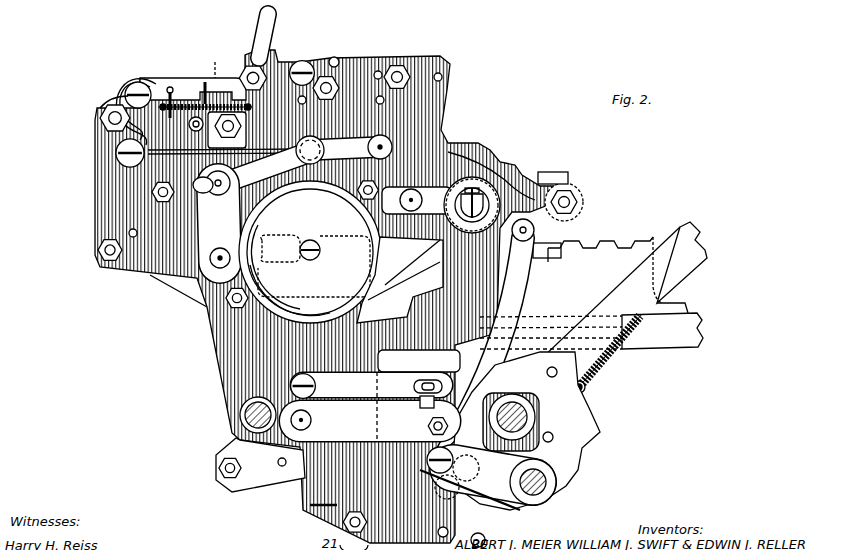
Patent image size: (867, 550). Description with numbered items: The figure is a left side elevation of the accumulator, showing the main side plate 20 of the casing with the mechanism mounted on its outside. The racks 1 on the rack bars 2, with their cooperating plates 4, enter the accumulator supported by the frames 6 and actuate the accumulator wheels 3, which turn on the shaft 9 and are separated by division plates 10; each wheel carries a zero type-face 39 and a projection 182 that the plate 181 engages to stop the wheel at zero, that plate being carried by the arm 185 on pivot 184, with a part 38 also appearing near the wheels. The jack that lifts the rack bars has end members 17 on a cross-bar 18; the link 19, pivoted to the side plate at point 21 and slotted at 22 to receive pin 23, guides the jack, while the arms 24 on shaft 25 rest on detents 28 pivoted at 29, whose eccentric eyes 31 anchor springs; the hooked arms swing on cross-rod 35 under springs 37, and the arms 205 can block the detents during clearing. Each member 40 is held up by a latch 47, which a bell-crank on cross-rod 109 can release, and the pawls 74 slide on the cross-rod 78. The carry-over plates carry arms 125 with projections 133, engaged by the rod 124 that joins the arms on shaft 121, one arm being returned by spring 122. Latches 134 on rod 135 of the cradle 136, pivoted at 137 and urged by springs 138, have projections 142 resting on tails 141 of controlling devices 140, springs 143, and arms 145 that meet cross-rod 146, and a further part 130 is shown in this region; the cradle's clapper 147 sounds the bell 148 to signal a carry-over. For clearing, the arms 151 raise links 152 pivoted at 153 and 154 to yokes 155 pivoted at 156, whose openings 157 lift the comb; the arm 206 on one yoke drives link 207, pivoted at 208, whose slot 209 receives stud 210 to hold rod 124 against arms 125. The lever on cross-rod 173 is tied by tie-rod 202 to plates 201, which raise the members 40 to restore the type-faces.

The rack 1 is at (615, 232).
The rack bar 2 is at (600, 255).
The accumulator wheel 3 is at (490, 159).
The plate 4 is at (700, 322).
The frame 6 is at (700, 250).
The shaft 9 is at (472, 205).
The division plate 10 is at (556, 252).
The end member 17 is at (419, 361).
The cross-bar 18 is at (436, 428).
The link 19 is at (371, 387).
The side plate 20 is at (100, 228).
The pivot point 21 is at (316, 385).
The slot 22 is at (426, 408).
The pin 23 is at (426, 381).
The arm 24 is at (370, 413).
The shaft 25 is at (312, 421).
The detent 28 is at (432, 12).
The pivot 29 is at (382, 56).
The eccentric eye 31 is at (484, 536).
The cross-rod 35 is at (552, 378).
The spring 37 is at (606, 368).
The lug 38 is at (447, 132).
The zero type-face 39 is at (493, 150).
The member 40 is at (435, 161).
The latch 47 is at (398, 258).
The pawl 74 is at (334, 60).
The cross-rod 78 is at (302, 62).
The cross-rod 109 is at (115, 262).
The shaft 121 is at (222, 252).
The spring 122 is at (236, 153).
The rod 124 is at (227, 130).
The arm 125 is at (198, 129).
The spring 130 is at (205, 104).
The projection 133 is at (144, 114).
The latch 134 is at (188, 82).
The rod 135 is at (128, 86).
The cradle 136 is at (160, 125).
The pivot 137 is at (117, 150).
The spring 138 is at (207, 80).
The controlling device 140 is at (548, 482).
The tail 141 is at (215, 57).
The projection 142 is at (262, 60).
The spring 143 is at (168, 90).
The arm 145 is at (122, 110).
The cross-rod 146 is at (103, 115).
The clapper 147 is at (300, 158).
The bell 148 is at (310, 252).
The arm 151 is at (493, 468).
The link 152 is at (526, 282).
The pivot 153 is at (458, 460).
The pivot 154 is at (535, 232).
The yoke 155 is at (428, 226).
The pivot 156 is at (410, 212).
The opening 157 is at (455, 228).
The cross-rod 173 is at (246, 410).
The plate 181 is at (545, 182).
The projection 182 is at (530, 176).
The pivot 184 is at (567, 176).
The arm 185 is at (582, 194).
The plate 201 is at (258, 478).
The tie-rod 202 is at (221, 466).
The arm 205 is at (470, 490).
The arm 206 is at (400, 200).
The link 207 is at (264, 169).
The pivot 208 is at (351, 147).
The slot 209 is at (218, 223).
The stud 210 is at (222, 190).